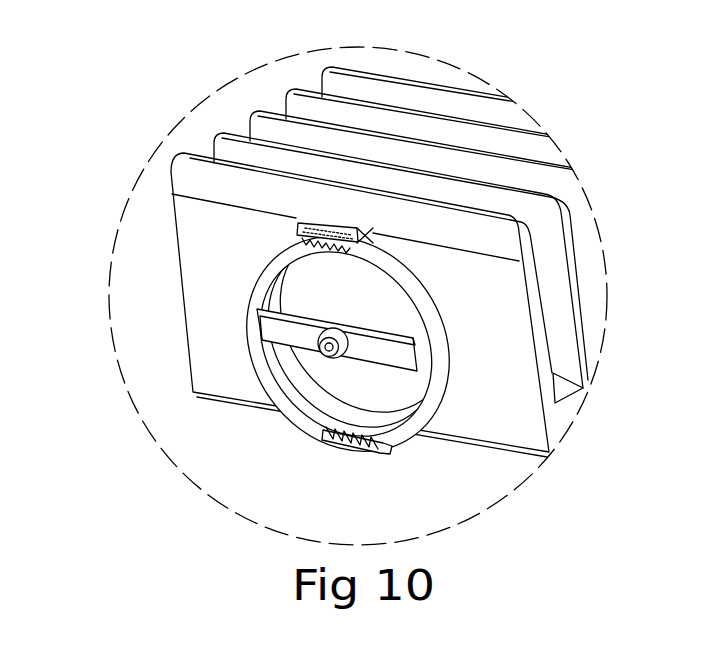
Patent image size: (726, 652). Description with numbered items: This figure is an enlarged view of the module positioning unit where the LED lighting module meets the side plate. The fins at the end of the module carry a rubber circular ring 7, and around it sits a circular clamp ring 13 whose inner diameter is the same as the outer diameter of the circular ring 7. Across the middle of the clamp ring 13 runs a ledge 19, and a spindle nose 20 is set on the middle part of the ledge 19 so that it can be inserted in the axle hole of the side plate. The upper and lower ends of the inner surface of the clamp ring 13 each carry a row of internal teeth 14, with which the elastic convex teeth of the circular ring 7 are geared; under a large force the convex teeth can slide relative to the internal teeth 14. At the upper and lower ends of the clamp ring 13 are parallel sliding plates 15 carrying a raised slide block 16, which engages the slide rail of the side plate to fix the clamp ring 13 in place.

The circular ring 7 is at (283, 298).
The clamp ring 13 is at (258, 281).
The internal teeth 14 is at (296, 226).
The sliding plate 15 is at (372, 242).
The slide block 16 is at (356, 243).
The ledge 19 is at (287, 330).
The spindle nose 20 is at (329, 349).